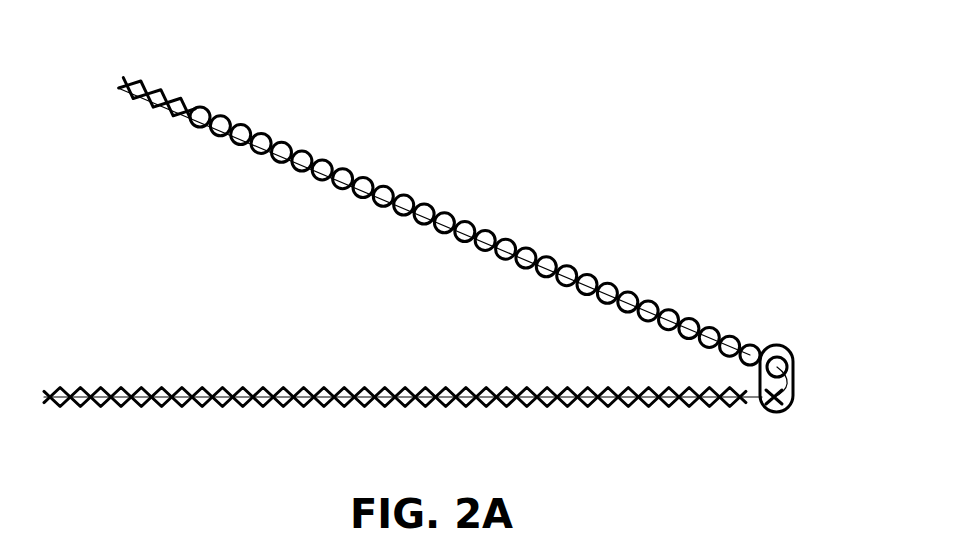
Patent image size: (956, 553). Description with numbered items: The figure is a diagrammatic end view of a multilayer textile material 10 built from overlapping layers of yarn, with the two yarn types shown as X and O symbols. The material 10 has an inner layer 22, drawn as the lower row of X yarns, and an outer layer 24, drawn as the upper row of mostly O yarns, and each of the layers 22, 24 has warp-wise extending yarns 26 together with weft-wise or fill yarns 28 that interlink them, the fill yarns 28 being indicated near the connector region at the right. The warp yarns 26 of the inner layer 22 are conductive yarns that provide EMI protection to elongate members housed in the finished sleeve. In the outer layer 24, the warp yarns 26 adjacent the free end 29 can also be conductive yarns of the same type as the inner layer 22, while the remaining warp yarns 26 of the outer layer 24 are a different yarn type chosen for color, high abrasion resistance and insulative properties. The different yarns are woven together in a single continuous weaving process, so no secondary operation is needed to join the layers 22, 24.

The textile material 10 is at (103, 166).
The inner layer 22 is at (97, 405).
The outer layer 24 is at (193, 109).
The warp-wise extending yarns 26 is at (167, 102).
The weft-wise or fill yarns 28 is at (762, 352).
The free end 29 is at (121, 80).